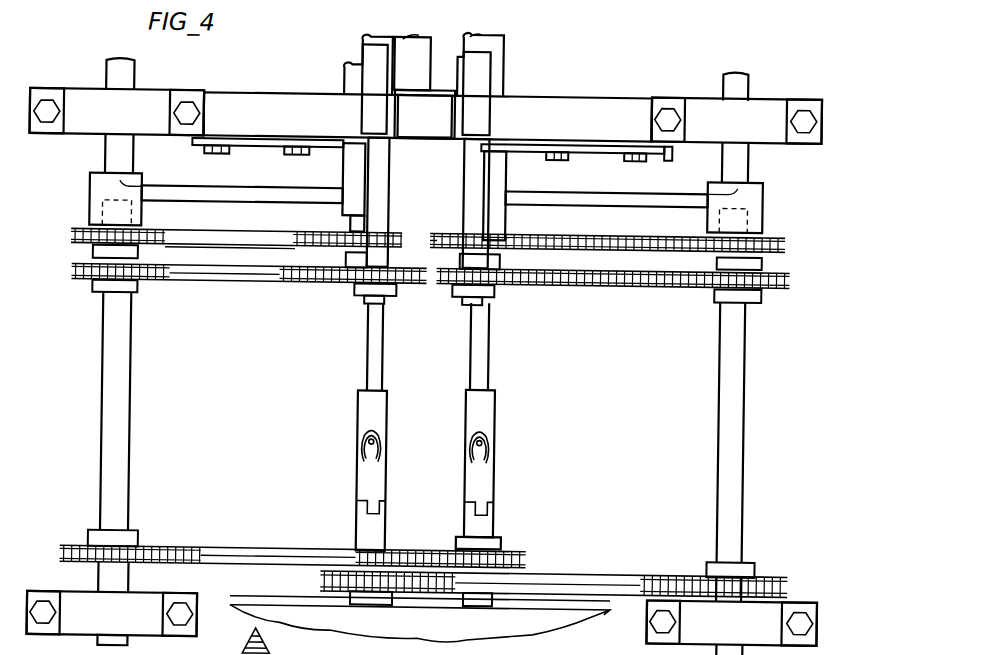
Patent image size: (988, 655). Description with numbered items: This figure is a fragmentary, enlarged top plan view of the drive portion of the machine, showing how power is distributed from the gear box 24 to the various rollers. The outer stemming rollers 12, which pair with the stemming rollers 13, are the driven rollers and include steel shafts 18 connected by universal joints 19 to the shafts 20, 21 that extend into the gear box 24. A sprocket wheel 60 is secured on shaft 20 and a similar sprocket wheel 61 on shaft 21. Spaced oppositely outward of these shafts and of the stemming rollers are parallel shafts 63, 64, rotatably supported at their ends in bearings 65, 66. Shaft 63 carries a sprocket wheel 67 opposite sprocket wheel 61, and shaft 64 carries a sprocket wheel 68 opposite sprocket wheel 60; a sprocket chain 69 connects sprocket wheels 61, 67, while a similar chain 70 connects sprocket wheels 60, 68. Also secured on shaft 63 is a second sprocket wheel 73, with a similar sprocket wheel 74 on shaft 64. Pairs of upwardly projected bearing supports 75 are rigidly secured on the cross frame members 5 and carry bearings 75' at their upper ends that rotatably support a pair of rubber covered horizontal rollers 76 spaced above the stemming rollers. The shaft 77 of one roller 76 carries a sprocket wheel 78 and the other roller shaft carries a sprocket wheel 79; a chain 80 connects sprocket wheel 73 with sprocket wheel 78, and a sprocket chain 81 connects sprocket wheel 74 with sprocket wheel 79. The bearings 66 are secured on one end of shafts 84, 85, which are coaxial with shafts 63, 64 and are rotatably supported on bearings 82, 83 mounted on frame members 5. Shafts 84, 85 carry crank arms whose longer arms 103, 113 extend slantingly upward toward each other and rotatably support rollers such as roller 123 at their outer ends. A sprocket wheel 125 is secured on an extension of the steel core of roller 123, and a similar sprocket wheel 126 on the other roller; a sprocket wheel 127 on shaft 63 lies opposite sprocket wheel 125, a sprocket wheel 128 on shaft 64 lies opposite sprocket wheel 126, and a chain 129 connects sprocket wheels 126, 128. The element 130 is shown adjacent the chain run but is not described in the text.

The cross frame member 5 is at (265, 96).
The outer stemming roller 12 is at (347, 44).
The stemming roller 13 is at (407, 39).
The steel shaft 18 is at (474, 342).
The universal joint 19 is at (348, 444).
The shaft 20 is at (489, 522).
The shaft 21 is at (361, 530).
The gear box 24 is at (444, 627).
The sprocket wheel 60 is at (529, 554).
The sprocket wheel 61 is at (323, 578).
The shaft 63 is at (740, 471).
The shaft 64 is at (123, 468).
The bearing 65 is at (132, 623).
The bearing 66 is at (84, 201).
The sprocket wheel 67 is at (787, 578).
The sprocket wheel 68 is at (59, 553).
The sprocket chain 69 is at (628, 570).
The chain 70 is at (276, 545).
The second sprocket wheel 73 is at (779, 266).
The sprocket wheel 74 is at (66, 268).
The bearing support 75 is at (432, 163).
The bearing 75' is at (420, 133).
The rubber covered horizontal roller 76 is at (368, 107).
The shaft 77 is at (477, 213).
The sprocket wheel 78 is at (431, 276).
The sprocket wheel 79 is at (414, 276).
The chain 80 is at (608, 286).
The sprocket chain 81 is at (288, 281).
The bearing 82 is at (730, 134).
The bearing 83 is at (111, 128).
The shaft 84 is at (741, 158).
The shaft 85 is at (126, 156).
The longer arm 103 is at (639, 181).
The longer arm 113 is at (189, 192).
The roller 123 is at (449, 66).
The sprocket wheel 125 is at (427, 246).
The sprocket wheel 126 is at (395, 236).
The sprocket wheel 127 is at (778, 242).
The sprocket wheel 128 is at (67, 239).
The chain 129 is at (590, 231).
The chain guide 130 is at (275, 235).